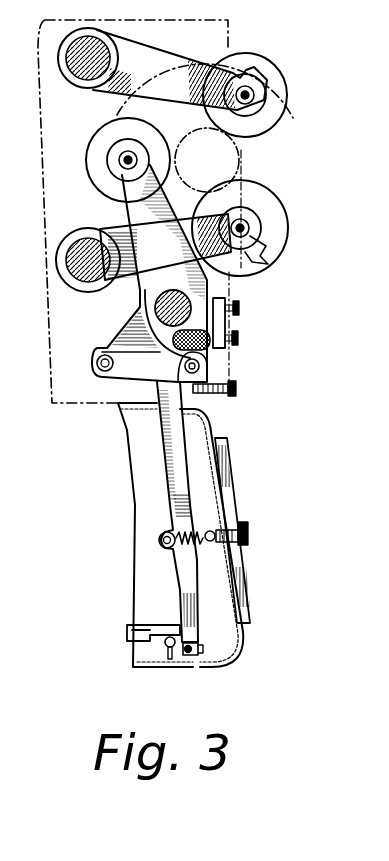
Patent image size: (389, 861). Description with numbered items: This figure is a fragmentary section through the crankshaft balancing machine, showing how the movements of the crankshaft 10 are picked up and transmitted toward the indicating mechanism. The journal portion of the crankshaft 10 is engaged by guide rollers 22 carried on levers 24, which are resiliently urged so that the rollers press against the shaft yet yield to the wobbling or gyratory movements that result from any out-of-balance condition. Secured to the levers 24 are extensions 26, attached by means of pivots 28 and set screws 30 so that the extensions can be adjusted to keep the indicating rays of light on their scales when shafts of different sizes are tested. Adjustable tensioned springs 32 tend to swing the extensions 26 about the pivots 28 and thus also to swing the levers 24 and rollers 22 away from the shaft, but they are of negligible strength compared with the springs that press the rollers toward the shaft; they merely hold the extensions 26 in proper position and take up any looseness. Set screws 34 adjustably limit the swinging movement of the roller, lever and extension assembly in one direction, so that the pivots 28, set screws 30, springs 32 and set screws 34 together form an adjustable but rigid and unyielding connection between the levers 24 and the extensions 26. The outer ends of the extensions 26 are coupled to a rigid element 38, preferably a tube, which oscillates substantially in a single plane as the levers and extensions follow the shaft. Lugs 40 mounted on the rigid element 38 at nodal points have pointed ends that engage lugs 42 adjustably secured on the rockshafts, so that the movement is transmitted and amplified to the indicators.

The crankshaft 10 is at (248, 169).
The guide rollers 22 is at (265, 68).
The levers 24 is at (147, 58).
The extensions 26 is at (170, 486).
The pivots 28 is at (212, 357).
The set screws 30 is at (238, 338).
The adjustable tensioned springs 32 is at (200, 548).
The set screws 34 is at (236, 389).
The rigid element 38 is at (183, 656).
The lugs 40 is at (172, 660).
The lugs 42 is at (158, 662).